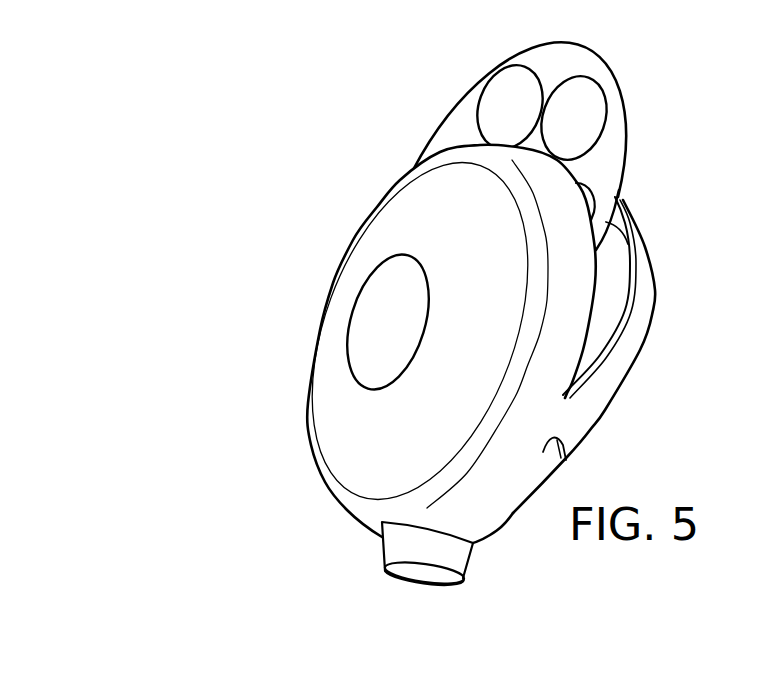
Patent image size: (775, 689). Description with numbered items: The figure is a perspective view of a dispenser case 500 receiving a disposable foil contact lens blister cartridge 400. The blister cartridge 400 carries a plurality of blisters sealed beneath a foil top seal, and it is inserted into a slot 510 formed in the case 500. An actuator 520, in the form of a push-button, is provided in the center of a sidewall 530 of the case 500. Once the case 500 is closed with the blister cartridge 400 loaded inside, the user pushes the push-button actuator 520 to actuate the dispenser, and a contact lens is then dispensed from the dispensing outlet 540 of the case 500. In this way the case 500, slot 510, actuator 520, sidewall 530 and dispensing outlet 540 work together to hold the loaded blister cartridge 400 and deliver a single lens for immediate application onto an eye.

The blister cartridge 400 is at (610, 140).
The case 500 is at (348, 457).
The slot 510 is at (620, 295).
The actuator 520 is at (368, 318).
The sidewall 530 is at (415, 220).
The dispensing outlet 540 is at (395, 558).